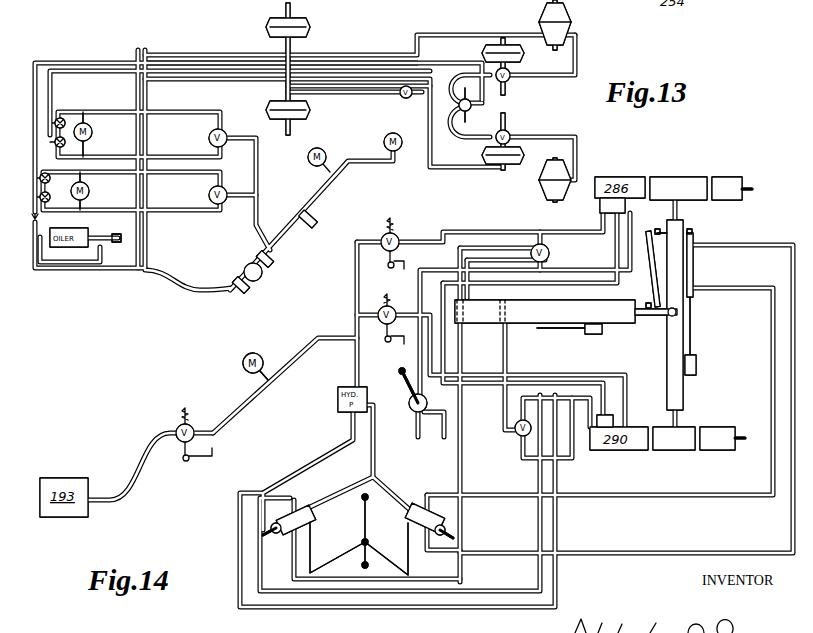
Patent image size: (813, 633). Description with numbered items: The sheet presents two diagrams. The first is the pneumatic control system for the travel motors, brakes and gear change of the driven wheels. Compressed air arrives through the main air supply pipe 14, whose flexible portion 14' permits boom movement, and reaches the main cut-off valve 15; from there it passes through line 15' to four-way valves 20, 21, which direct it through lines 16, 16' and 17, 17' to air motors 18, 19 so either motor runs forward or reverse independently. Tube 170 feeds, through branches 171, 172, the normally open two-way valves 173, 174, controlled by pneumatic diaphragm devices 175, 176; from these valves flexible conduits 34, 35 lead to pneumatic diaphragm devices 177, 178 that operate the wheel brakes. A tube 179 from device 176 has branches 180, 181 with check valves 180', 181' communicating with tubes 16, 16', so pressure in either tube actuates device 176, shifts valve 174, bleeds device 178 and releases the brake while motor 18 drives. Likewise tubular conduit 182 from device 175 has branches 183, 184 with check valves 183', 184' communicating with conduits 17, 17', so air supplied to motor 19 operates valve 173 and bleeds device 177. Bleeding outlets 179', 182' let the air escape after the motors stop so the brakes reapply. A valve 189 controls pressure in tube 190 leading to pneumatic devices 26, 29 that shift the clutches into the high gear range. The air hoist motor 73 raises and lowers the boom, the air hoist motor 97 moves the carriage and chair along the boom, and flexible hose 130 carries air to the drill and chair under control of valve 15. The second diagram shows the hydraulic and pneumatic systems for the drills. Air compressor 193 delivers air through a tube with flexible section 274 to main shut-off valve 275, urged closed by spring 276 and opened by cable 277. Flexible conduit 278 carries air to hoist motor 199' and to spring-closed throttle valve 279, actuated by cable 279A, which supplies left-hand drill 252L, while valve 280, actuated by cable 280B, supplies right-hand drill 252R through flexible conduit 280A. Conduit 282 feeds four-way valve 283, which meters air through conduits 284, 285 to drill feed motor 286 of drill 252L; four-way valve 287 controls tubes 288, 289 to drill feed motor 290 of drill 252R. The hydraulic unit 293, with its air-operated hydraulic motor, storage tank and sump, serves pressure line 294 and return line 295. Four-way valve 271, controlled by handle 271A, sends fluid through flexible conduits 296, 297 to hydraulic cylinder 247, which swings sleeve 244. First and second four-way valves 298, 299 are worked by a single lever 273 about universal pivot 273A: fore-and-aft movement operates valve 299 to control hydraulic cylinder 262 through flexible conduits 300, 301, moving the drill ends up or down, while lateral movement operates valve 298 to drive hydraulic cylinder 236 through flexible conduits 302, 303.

In FIG. 13, the main air supply pipe 14 is at (90, 257).
In FIG. 13, the flexible portion 14' is at (188, 268).
In FIG. 13, the main cut-off valve 15 is at (243, 215).
In FIG. 13, the line 15' is at (311, 221).
In FIG. 13, the line 16 is at (139, 125).
In FIG. 13, the line 16' is at (173, 137).
In FIG. 13, the line 17 is at (131, 191).
In FIG. 13, the line 17' is at (173, 199).
In FIG. 13, the air motor 18 is at (92, 130).
In FIG. 13, the air motor 19 is at (89, 191).
In FIG. 13, the four-way valve 20 is at (226, 190).
In FIG. 13, the four-way valve 21 is at (225, 132).
In FIG. 13, the pneumatic device 26 is at (268, 27).
In FIG. 13, the pneumatic device 29 is at (308, 108).
In FIG. 13, the flexible conduit 34 is at (558, 86).
In FIG. 13, the flexible conduit 35 is at (554, 140).
In FIG. 13, the air hoist motor 73 is at (308, 159).
In FIG. 13, the air hoist motor 97 is at (384, 141).
In FIG. 13, the flexible hose 130 is at (318, 222).
In FIG. 13, the tube 170 is at (146, 229).
In FIG. 13, the branch 171 is at (452, 143).
In FIG. 13, the branch 172 is at (492, 86).
In FIG. 13, the two-way valve 173 is at (506, 128).
In FIG. 13, the two-way valve 174 is at (522, 92).
In FIG. 13, the pneumatic diaphragm device 175 is at (516, 150).
In FIG. 13, the pneumatic diaphragm device 176 is at (516, 60).
In FIG. 13, the pneumatic diaphragm device 177 is at (539, 180).
In FIG. 13, the pneumatic diaphragm device 178 is at (539, 16).
In FIG. 13, the tube 179 is at (305, 110).
In FIG. 13, the bleeding outlet 179' is at (26, 122).
In FIG. 13, the branch 180 is at (73, 105).
In FIG. 13, the check valve 180' is at (29, 105).
In FIG. 13, the branch 181 is at (77, 151).
In FIG. 13, the check valve 181' is at (28, 143).
In FIG. 13, the tubular conduit 182 is at (324, 126).
In FIG. 13, the bleeding outlet 182' is at (26, 183).
In FIG. 13, the branch 183 is at (54, 198).
In FIG. 13, the check valve 183' is at (22, 166).
In FIG. 13, the branch 184 is at (80, 237).
In FIG. 13, the check valve 184' is at (21, 209).
In FIG. 13, the valve 189 is at (405, 99).
In FIG. 13, the tube 190 is at (358, 95).
In FIG. 14, the air compressor 193 is at (64, 497).
In FIG. 14, the hoist motor 199' is at (236, 364).
In FIG. 14, the hydraulic cylinder 236 is at (544, 332).
In FIG. 14, the sleeve 244 is at (684, 386).
In FIG. 14, the hydraulic cylinder 247 is at (653, 248).
In FIG. 14, the left-hand drill 252L is at (688, 176).
In FIG. 14, the right-hand drill 252R is at (674, 452).
In FIG. 14, the hydraulic cylinder 262 is at (696, 258).
In FIG. 14, the four-way valve 271 is at (409, 398).
In FIG. 14, the handle 271A is at (400, 372).
In FIG. 14, the single lever 273 is at (356, 517).
In FIG. 14, the universal pivot 273A is at (361, 572).
In FIG. 14, the flexible section 274 is at (127, 455).
In FIG. 14, the main shut-off valve 275 is at (178, 426).
In FIG. 14, the spring 276 is at (190, 413).
In FIG. 14, the cable 277 is at (208, 452).
In FIG. 14, the flexible conduit 278 is at (302, 350).
In FIG. 14, the throttle valve 279 is at (397, 232).
In FIG. 14, the cable 279A is at (400, 264).
In FIG. 14, the valve 280 is at (387, 296).
In FIG. 14, the flexible conduit 280A is at (638, 378).
In FIG. 14, the cable 280B is at (386, 338).
In FIG. 14, the conduit 282 is at (464, 322).
In FIG. 14, the four-way valve 283 is at (549, 254).
In FIG. 14, the conduit 284 is at (622, 283).
In FIG. 14, the conduit 285 is at (598, 224).
In FIG. 14, the drill feed motor 286 is at (620, 195).
In FIG. 14, the four-way valve 287 is at (513, 438).
In FIG. 14, the tube 288 is at (537, 397).
In FIG. 14, the tube 289 is at (572, 460).
In FIG. 14, the drill feed motor 290 is at (619, 432).
In FIG. 14, the hydraulic system 293 is at (336, 406).
In FIG. 14, the pressure line 294 is at (368, 460).
In FIG. 14, the return line 295 is at (298, 460).
In FIG. 14, the flexible conduit 296 is at (420, 274).
In FIG. 14, the flexible conduit 297 is at (418, 434).
In FIG. 14, the first four-way valve 298 is at (325, 484).
In FIG. 14, the second four-way valve 299 is at (418, 506).
In FIG. 14, the flexible conduit 300 is at (692, 498).
In FIG. 14, the flexible conduit 301 is at (690, 554).
In FIG. 14, the flexible conduit 302 is at (510, 588).
In FIG. 14, the flexible conduit 303 is at (514, 612).